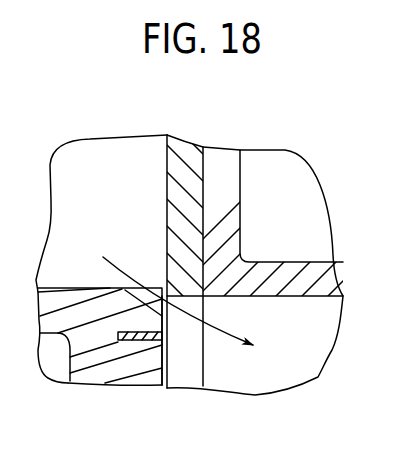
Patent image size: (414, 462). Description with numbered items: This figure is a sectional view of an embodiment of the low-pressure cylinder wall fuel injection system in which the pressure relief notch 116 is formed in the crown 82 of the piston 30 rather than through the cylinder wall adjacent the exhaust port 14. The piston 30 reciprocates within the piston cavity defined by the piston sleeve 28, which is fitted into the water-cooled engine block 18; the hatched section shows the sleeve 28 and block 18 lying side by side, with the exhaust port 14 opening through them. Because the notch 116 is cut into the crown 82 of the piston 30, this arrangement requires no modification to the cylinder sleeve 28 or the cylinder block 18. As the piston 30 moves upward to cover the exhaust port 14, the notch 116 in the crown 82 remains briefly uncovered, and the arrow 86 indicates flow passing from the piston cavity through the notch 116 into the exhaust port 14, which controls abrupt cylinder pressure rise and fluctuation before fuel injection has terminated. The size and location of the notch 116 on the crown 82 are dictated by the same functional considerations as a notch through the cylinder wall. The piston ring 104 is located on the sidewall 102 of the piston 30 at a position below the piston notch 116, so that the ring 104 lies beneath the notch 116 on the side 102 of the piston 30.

The exhaust port 14 is at (298, 297).
The engine block 18 is at (225, 148).
The piston sleeve 28 is at (183, 143).
The piston 30 is at (88, 371).
The crown 82 is at (63, 288).
The arrow 86 is at (217, 330).
The sidewall 102 is at (165, 363).
The piston ring 104 is at (127, 341).
The pressure relief notch 116 is at (125, 290).